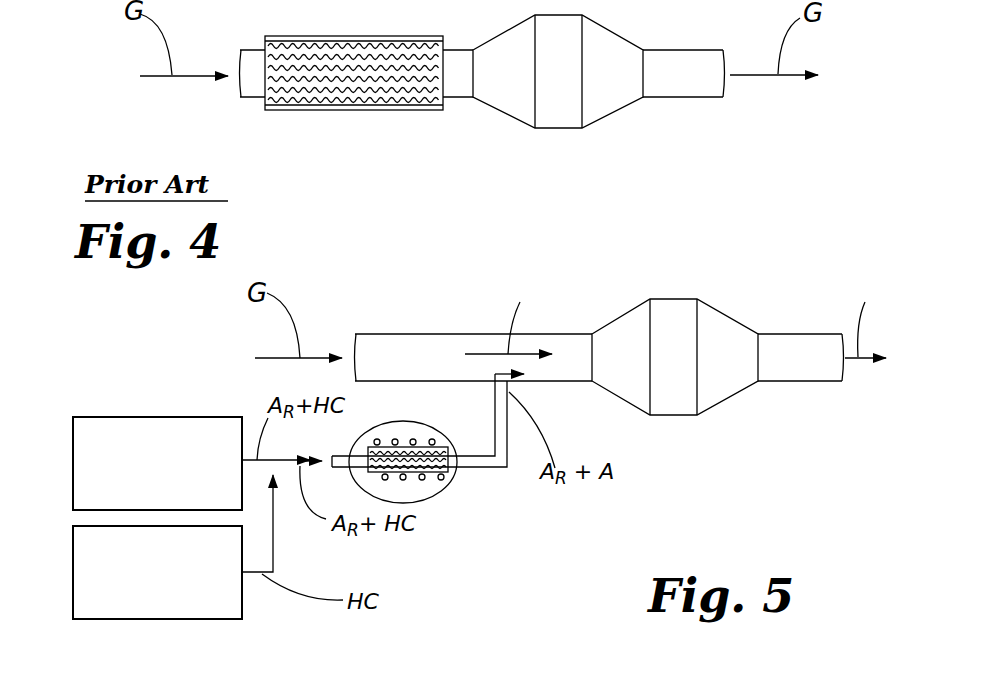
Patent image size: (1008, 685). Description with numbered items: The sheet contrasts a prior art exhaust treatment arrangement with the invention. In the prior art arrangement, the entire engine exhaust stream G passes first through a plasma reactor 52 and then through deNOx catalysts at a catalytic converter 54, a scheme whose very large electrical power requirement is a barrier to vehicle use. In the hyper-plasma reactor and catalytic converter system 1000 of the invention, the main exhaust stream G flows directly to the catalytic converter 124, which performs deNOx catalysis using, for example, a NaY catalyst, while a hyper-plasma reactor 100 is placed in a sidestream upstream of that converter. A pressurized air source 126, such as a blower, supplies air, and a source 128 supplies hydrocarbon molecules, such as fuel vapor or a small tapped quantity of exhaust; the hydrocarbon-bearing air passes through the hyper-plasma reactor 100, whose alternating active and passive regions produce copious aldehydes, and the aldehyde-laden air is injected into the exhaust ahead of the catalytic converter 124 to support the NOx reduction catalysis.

In FIG. 4, the plasma reactor 52 is at (338, 118).
In FIG. 4, the catalytic converter 54 is at (562, 140).
In FIG. 5, the hyper-plasma reactor 100 is at (432, 504).
In FIG. 5, the catalytic converter 124 is at (685, 426).
In FIG. 5, the pressurized air source 126 is at (133, 417).
In FIG. 5, the source of hydrocarbon 128 is at (163, 620).
In FIG. 5, the hyper-plasma reactor and catalytic converter system 1000 is at (621, 359).